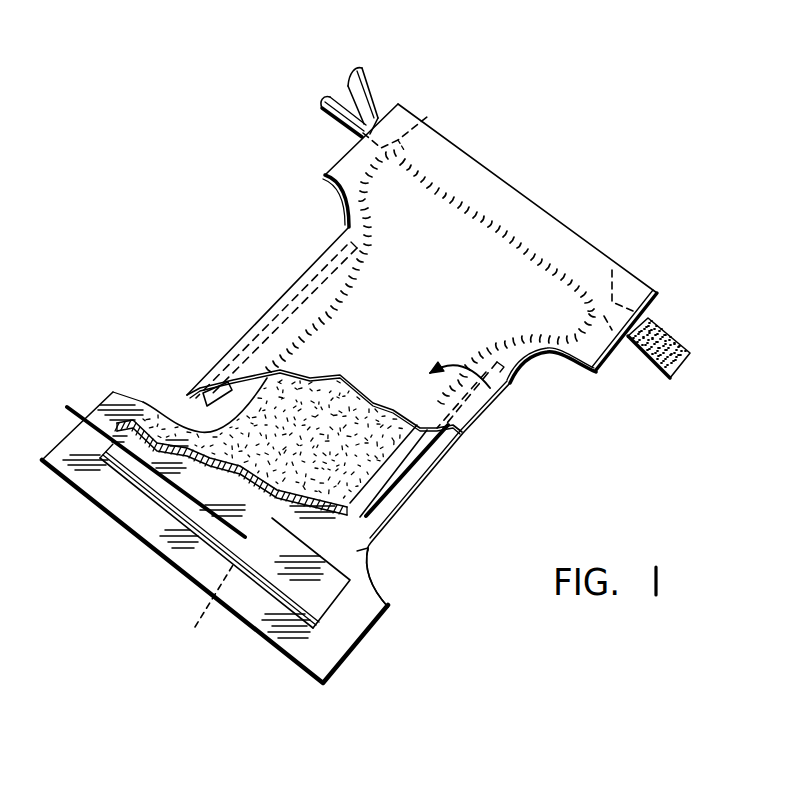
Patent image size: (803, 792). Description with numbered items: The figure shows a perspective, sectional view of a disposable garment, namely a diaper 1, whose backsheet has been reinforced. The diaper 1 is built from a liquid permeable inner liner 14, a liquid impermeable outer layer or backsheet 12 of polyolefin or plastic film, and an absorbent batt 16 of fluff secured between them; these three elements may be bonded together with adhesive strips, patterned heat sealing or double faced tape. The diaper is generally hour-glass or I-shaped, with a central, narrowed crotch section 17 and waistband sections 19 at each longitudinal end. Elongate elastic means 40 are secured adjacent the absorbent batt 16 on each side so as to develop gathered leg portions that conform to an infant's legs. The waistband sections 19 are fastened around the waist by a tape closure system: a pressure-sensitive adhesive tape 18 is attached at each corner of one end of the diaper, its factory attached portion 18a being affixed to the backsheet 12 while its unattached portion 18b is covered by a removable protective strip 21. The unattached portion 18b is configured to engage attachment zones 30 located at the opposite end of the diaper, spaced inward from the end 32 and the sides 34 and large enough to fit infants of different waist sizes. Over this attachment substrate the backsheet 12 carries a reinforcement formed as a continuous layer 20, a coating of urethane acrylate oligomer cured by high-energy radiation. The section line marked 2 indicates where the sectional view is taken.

The diaper 1 is at (178, 228).
The backsheet 12 is at (367, 550).
The inner liner 14 is at (337, 313).
The absorbent batt 16 is at (431, 455).
The crotch section 17 is at (497, 395).
The pressure-sensitive adhesive tape 18 is at (668, 335).
The factory attached portion 18a is at (427, 117).
The unattached portion 18b is at (269, 68).
The waistband sections 19 is at (528, 197).
The continuous layer 20 is at (141, 481).
The removable protective strip 21 is at (366, 86).
The attachment zones 30 is at (197, 606).
The end 32 is at (160, 558).
The sides 34 is at (141, 402).
The elongate elastic means 40 is at (427, 542).
The section line 2- 2 is at (12, 428).